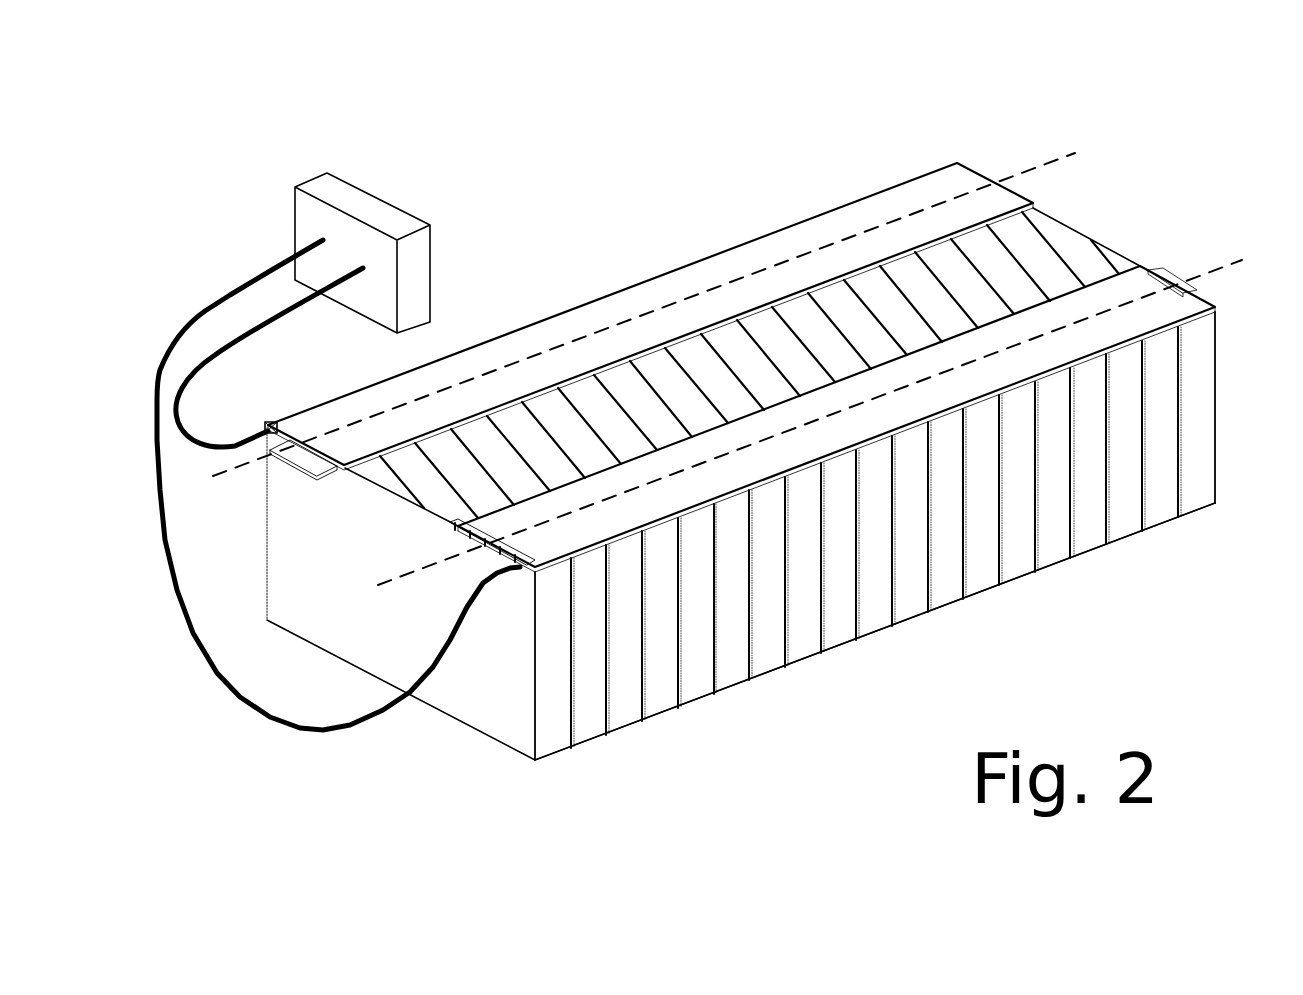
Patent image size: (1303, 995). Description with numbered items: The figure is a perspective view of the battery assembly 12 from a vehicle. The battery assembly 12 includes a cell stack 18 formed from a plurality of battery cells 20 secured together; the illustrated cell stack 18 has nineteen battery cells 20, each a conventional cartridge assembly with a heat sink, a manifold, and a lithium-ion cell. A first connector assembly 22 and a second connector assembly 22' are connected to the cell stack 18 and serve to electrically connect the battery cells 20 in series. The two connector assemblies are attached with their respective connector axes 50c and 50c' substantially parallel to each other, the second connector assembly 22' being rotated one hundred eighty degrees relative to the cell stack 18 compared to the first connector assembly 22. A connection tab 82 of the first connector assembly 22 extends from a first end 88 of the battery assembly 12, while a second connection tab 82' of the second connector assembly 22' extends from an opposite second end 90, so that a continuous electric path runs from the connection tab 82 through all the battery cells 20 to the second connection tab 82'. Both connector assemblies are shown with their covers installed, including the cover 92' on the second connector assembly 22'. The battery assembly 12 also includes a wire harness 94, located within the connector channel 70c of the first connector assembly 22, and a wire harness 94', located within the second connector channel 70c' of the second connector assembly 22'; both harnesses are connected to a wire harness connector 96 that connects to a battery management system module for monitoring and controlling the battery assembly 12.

The battery assembly 12 is at (528, 165).
The cell stack 18 is at (357, 771).
The battery cells 20 is at (653, 697).
The first connector assembly 22 is at (650, 258).
The second connector assembly 22' is at (836, 369).
The connector axis 50c is at (644, 283).
The connector axis 50c' is at (813, 392).
The connector channel 70c is at (296, 382).
The second connector channel 70c' is at (492, 656).
The connection tab 82 is at (268, 487).
The second connection tab 82' is at (1143, 242).
The first end 88 is at (458, 703).
The second end 90 is at (1215, 380).
The cover 92' is at (920, 297).
The wire harness 94 is at (269, 357).
The wire harness 94' is at (338, 506).
The wire harness connector 96 is at (295, 220).